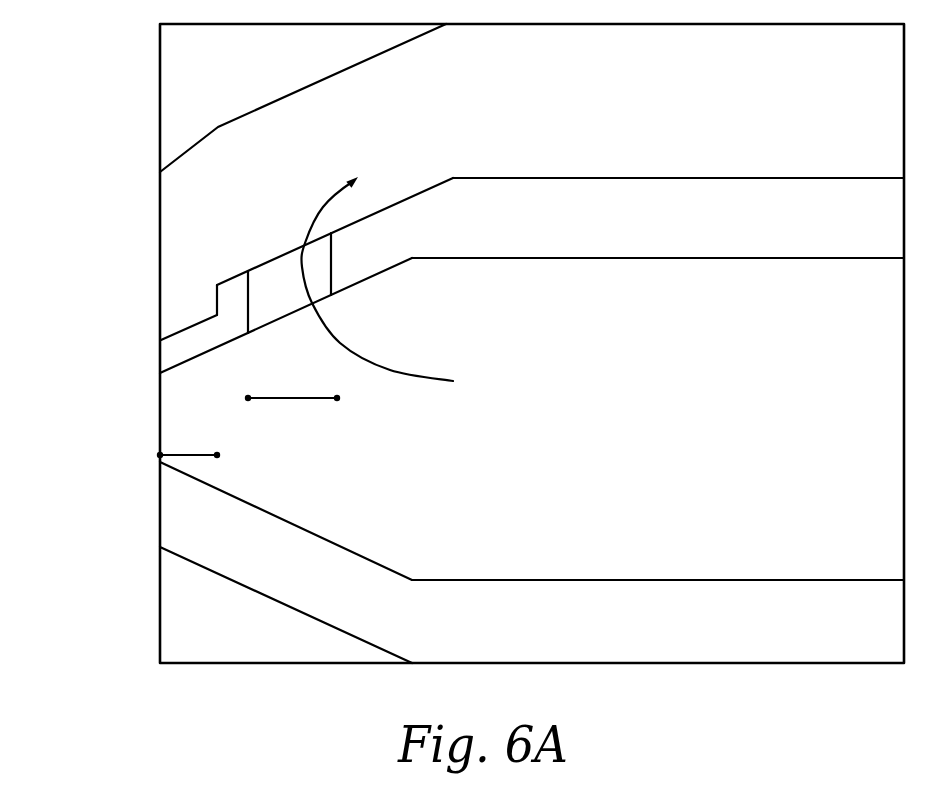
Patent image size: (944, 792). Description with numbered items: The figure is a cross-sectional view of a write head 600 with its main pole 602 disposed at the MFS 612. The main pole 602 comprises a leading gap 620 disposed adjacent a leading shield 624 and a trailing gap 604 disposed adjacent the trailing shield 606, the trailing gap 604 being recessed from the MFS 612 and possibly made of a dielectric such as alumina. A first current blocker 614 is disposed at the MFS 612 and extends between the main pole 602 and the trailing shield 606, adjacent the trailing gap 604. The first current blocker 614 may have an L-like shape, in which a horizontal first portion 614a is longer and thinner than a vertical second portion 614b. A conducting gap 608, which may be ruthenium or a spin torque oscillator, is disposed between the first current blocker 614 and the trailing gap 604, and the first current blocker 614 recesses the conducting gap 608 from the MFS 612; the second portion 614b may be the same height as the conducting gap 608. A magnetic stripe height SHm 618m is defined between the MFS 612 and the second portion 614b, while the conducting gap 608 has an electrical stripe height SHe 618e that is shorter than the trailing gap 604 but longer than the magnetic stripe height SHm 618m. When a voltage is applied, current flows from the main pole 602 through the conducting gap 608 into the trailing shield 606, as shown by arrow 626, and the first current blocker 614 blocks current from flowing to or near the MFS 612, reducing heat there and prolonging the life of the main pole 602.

The write head 600 is at (120, 44).
The trailing shield 606 is at (858, 91).
The trailing gap 604 is at (858, 236).
The main pole 602 is at (858, 427).
The leading gap 620 is at (858, 637).
The leading shield 624 is at (234, 637).
The first current blocker 614 is at (171, 353).
The first portion 614a is at (195, 345).
The second portion 614b is at (233, 289).
The conducting gap 608 is at (277, 307).
The arrow 626 is at (322, 205).
The MFS 612 is at (130, 459).
The electrical stripe height SHe 618e is at (293, 400).
The magnetic stripe height SHm 618m is at (190, 457).